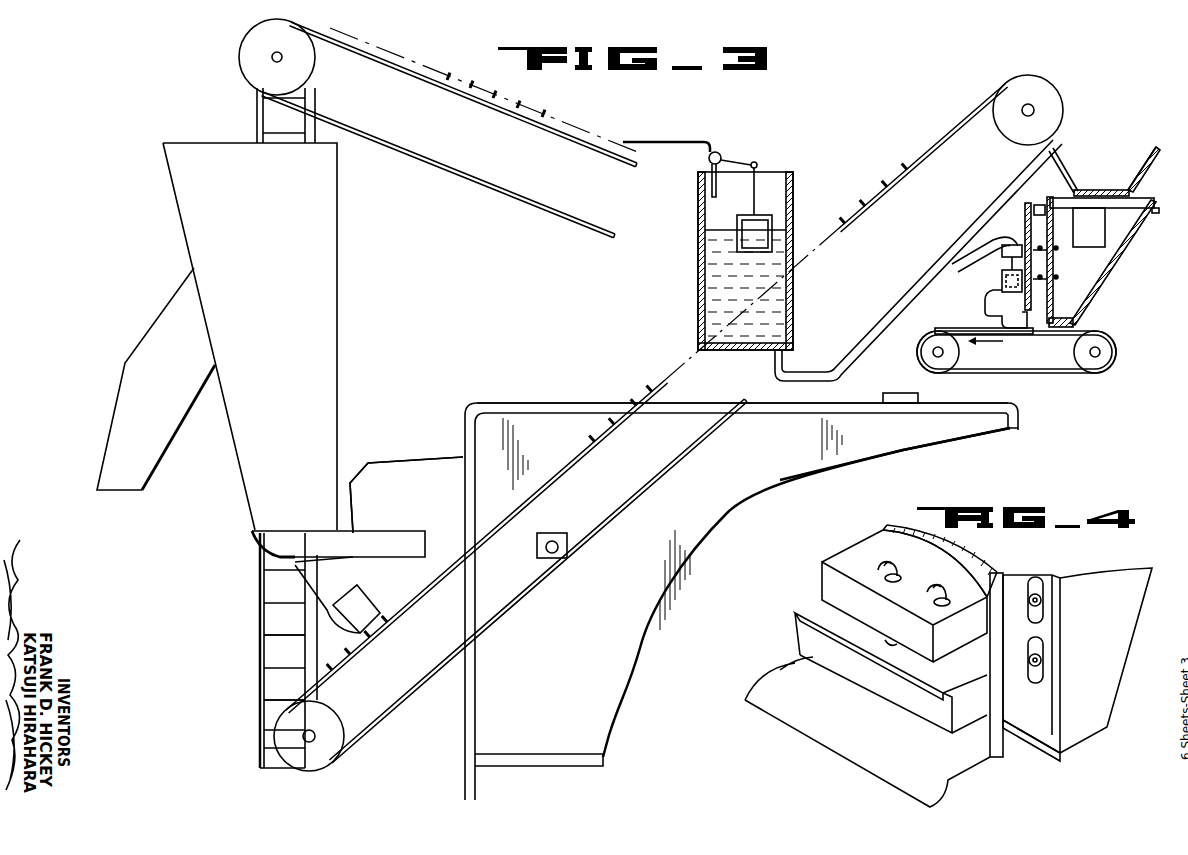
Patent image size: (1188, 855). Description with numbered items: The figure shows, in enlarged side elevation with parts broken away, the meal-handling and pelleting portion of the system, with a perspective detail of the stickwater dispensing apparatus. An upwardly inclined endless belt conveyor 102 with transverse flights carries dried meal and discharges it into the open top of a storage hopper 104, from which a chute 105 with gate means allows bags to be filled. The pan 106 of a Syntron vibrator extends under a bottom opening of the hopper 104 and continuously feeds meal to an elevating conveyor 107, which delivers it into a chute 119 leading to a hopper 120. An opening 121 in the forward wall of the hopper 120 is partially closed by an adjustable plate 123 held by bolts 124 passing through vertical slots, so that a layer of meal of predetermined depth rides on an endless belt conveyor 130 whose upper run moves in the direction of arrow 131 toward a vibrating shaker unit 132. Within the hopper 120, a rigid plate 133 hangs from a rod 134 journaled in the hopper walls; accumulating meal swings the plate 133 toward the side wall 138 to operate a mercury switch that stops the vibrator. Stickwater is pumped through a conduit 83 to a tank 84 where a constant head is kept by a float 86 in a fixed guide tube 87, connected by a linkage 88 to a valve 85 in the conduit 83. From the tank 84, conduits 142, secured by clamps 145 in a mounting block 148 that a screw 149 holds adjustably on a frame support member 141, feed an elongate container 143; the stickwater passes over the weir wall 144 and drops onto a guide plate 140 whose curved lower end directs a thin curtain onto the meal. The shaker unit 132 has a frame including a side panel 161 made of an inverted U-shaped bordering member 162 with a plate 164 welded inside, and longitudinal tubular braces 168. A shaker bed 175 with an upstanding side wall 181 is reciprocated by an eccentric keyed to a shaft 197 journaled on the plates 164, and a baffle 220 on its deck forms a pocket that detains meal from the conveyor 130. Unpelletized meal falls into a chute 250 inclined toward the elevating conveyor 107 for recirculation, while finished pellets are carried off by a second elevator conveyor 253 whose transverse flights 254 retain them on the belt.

In FIG. 3, the conduit 83 is at (650, 141).
In FIG. 3, the tank 84 is at (793, 185).
In FIG. 3, the valve 85 is at (719, 153).
In FIG. 3, the float 86 is at (746, 216).
In FIG. 3, the guide tube 87 is at (737, 222).
In FIG. 3, the linkage 88 is at (748, 162).
In FIG. 3, the endless belt conveyor 102 is at (505, 107).
In FIG. 3, the storage hopper 104 is at (283, 255).
In FIG. 3, the chute 105 is at (145, 388).
In FIG. 3, the pan 106 is at (292, 541).
In FIG. 3, the elevating conveyor 107 is at (662, 378).
In FIG. 3, the chute 119 is at (1055, 152).
In FIG. 3, the hopper 120 is at (1137, 207).
In FIG. 4, the hopper 120 is at (1124, 621).
In FIG. 3, the opening 121 is at (1053, 327).
In FIG. 4, the opening 121 is at (1025, 735).
In FIG. 3, the adjustable plate 123 is at (1055, 307).
In FIG. 4, the adjustable plate 123 is at (1030, 702).
In FIG. 4, the bolts 124 is at (1043, 655).
In FIG. 3, the endless belt conveyor 130 is at (1080, 330).
In FIG. 3, the arrow 131 is at (1000, 341).
In FIG. 3, the vibrating shaker unit 132 is at (498, 397).
In FIG. 3, the rigid plate 133 is at (1095, 222).
In FIG. 3, the rod 134 is at (1060, 205).
In FIG. 3, the side wall 138 is at (1087, 258).
In FIG. 3, the guide plate 140 is at (1000, 317).
In FIG. 4, the guide plate 140 is at (887, 753).
In FIG. 3, the frame support member 141 is at (1025, 212).
In FIG. 4, the frame support member 141 is at (970, 560).
In FIG. 3, the conduits 142 is at (900, 302).
In FIG. 4, the conduits 142 is at (873, 565).
In FIG. 3, the elongate container 143 is at (1005, 280).
In FIG. 4, the elongate container 143 is at (848, 640).
In FIG. 3, the wall 144 is at (992, 298).
In FIG. 4, the wall 144 is at (900, 687).
In FIG. 3, the clamps 145 is at (1015, 248).
In FIG. 4, the clamps 145 is at (930, 608).
In FIG. 3, the mounting block 148 is at (1000, 236).
In FIG. 4, the mounting block 148 is at (875, 552).
In FIG. 3, the screw 149 is at (1035, 250).
In FIG. 3, the side panel 161 is at (563, 405).
In FIG. 3, the bordering member 162 is at (767, 410).
In FIG. 3, the plate 164 is at (640, 617).
In FIG. 3, the longitudinal tubular braces 168 is at (545, 757).
In FIG. 3, the shaker bed 175 is at (415, 460).
In FIG. 3, the side wall 181 is at (436, 508).
In FIG. 3, the shaft 197 is at (552, 543).
In FIG. 3, the baffle 220 is at (900, 392).
In FIG. 3, the chute 250 is at (358, 607).
In FIG. 3, the second elevator conveyor 253 is at (283, 118).
In FIG. 3, the transverse flights 254 is at (273, 700).